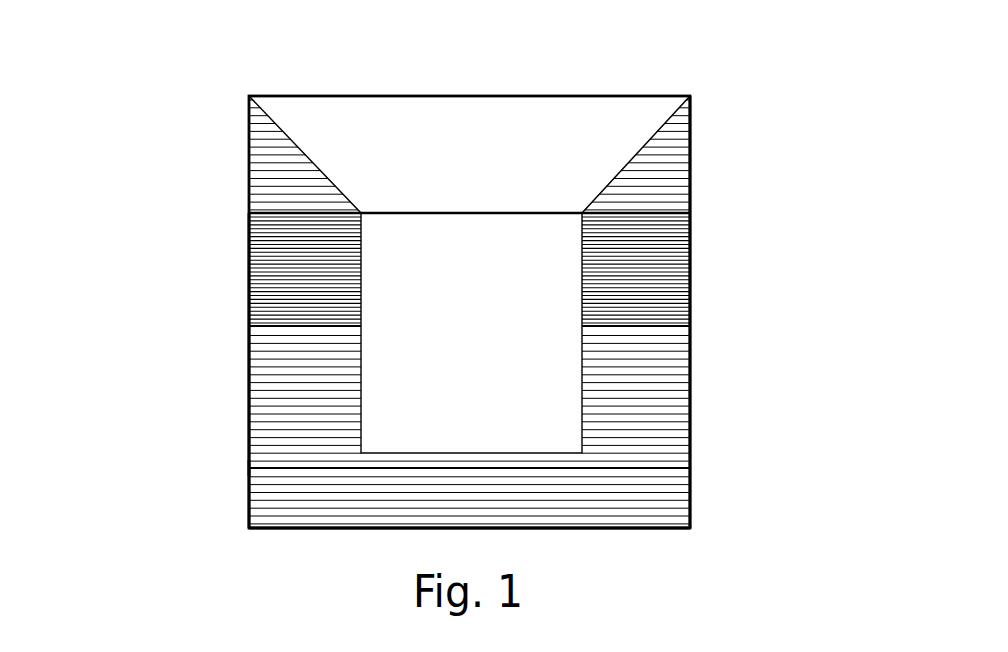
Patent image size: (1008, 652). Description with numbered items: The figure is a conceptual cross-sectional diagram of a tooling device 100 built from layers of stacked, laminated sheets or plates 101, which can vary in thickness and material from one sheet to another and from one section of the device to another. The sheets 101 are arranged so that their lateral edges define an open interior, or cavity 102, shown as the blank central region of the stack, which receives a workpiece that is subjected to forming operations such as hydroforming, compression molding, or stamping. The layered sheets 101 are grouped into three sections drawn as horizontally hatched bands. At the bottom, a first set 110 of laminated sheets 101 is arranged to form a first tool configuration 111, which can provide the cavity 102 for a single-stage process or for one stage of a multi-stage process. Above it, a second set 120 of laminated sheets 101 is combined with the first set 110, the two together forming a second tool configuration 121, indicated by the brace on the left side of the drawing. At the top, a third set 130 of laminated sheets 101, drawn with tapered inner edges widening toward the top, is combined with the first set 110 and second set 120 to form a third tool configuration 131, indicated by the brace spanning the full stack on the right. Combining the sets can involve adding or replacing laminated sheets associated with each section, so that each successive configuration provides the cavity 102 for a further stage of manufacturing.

The tooling device 100 is at (281, 71).
The sheets 101 is at (692, 488).
The cavity 102 is at (490, 397).
The first set of laminated sheets 110 is at (692, 421).
The first tool configuration 111 is at (241, 466).
The second set of laminated sheets 120 is at (693, 268).
The second tool configuration 121 is at (137, 214).
The third set of laminated sheets 130 is at (693, 148).
The third tool configuration 131 is at (813, 91).